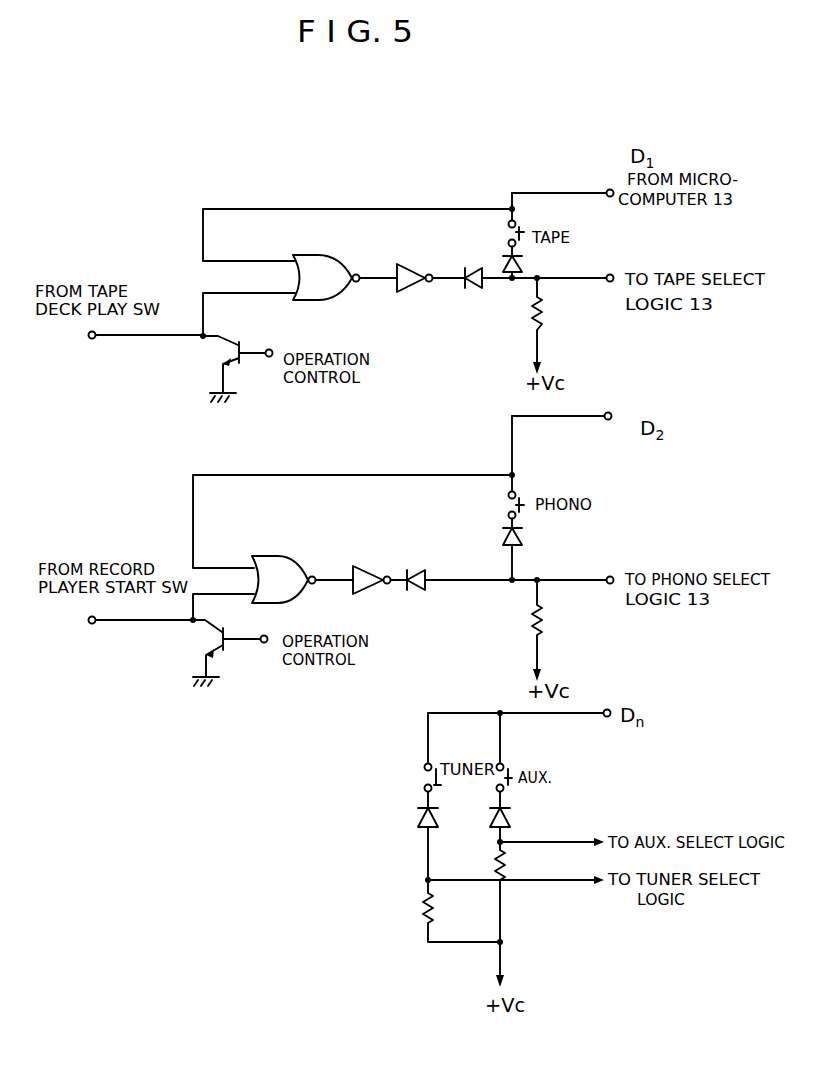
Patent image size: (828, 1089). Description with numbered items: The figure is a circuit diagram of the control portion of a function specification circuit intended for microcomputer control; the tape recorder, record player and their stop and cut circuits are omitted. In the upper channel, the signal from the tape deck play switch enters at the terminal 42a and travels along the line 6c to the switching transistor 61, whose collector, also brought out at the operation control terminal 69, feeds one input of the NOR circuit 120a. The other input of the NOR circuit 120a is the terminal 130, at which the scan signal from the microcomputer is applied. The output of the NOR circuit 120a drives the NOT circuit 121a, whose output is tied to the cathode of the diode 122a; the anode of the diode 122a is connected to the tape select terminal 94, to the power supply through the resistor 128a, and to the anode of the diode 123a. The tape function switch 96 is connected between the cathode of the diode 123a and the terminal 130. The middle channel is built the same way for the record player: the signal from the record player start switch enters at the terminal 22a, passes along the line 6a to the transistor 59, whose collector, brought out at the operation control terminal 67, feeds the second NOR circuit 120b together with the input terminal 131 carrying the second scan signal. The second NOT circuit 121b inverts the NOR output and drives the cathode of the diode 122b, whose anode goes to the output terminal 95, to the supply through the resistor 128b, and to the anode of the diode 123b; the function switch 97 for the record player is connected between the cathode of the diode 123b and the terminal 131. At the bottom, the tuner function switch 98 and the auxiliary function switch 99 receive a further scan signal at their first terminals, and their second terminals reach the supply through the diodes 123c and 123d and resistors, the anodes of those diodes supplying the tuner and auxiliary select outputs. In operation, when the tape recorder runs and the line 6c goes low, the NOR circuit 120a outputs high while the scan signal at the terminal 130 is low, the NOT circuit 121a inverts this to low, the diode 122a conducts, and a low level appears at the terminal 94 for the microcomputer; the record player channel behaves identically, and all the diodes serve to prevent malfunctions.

The NOR circuit 120a is at (330, 250).
The NOT circuit 121a is at (412, 264).
The diode 122a is at (469, 268).
The diode 123a is at (522, 266).
The resistor 128a is at (543, 312).
The tape select terminal 94 is at (609, 274).
The terminal 130 is at (615, 185).
The tape function switch 96 is at (520, 230).
The terminal from tape deck play switch 42a is at (88, 336).
The line 6c is at (145, 337).
The switching transistor 61 is at (229, 340).
The operation control terminal 69 is at (272, 352).
The second NOR circuit 120b is at (272, 542).
The second NOT circuit 121b is at (364, 566).
The diode 122b is at (418, 570).
The diode 123b is at (525, 541).
The resistor 128b is at (543, 616).
The output terminal 95 is at (609, 576).
The input terminal 131 is at (612, 400).
The function switch 97 is at (519, 496).
The terminal from record player start switch 22a is at (88, 621).
The line 6a is at (143, 622).
The transistor 59 is at (224, 658).
The operation control terminal 67 is at (266, 620).
The tuner function switch 98 is at (437, 786).
The auxiliary function switch 99 is at (511, 789).
The diode 123c is at (418, 824).
The diode 123d is at (512, 824).